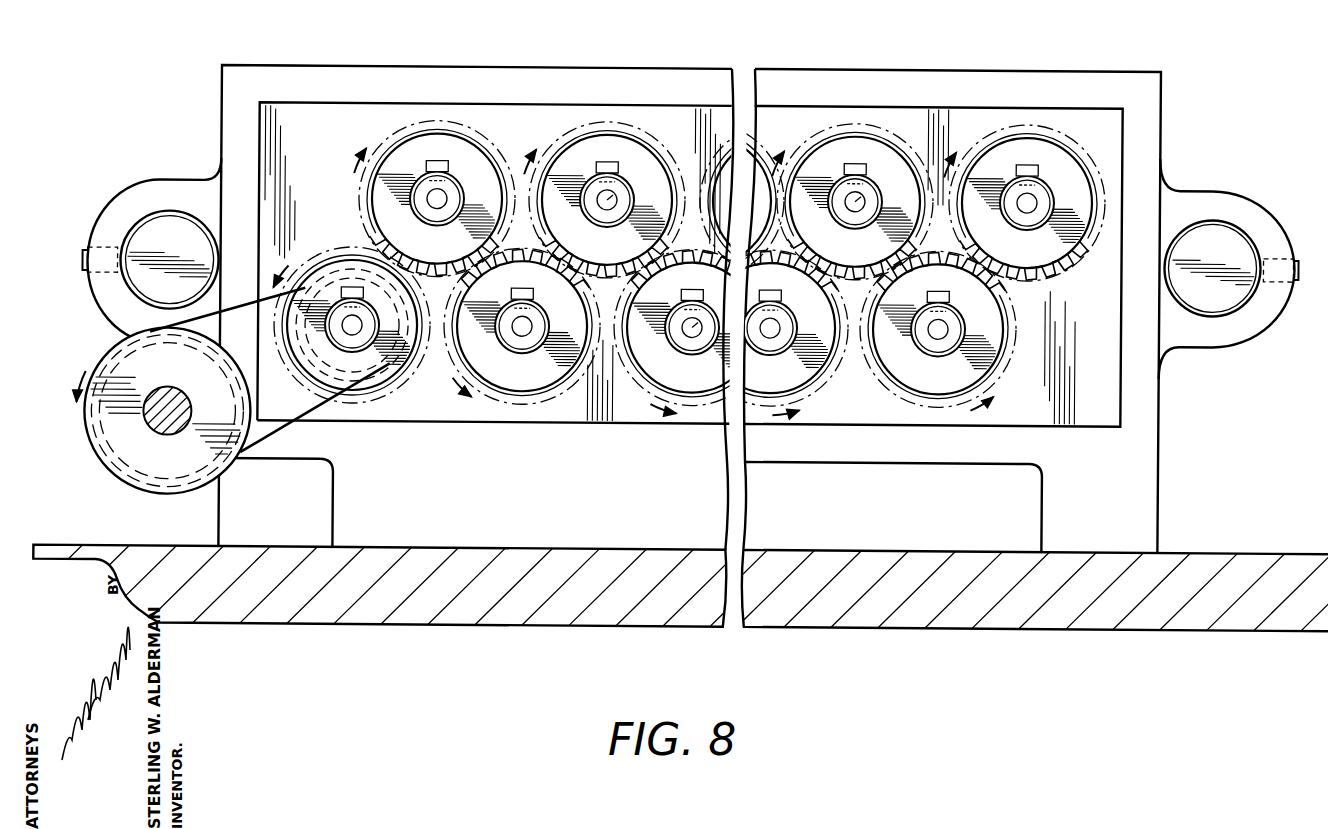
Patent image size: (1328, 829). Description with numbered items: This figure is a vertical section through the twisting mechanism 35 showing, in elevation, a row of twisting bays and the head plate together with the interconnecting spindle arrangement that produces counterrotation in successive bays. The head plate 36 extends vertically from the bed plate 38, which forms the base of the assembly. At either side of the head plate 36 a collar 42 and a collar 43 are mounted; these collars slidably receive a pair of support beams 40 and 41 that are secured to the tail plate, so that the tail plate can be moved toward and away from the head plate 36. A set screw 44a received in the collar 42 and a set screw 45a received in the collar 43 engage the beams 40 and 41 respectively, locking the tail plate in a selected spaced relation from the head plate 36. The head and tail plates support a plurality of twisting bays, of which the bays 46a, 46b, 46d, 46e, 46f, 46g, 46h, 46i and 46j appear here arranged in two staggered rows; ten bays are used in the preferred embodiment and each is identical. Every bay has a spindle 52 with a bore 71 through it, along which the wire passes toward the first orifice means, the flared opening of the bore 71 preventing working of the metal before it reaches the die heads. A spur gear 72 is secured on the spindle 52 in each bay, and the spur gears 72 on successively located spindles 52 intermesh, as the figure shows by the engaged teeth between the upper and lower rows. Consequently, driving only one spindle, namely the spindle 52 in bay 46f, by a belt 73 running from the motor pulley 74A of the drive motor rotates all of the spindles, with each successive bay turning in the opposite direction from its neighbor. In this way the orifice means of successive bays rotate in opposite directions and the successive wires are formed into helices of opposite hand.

The twisting mechanism 35 is at (253, 43).
The head plate 36 is at (272, 135).
The bed plate 38 is at (834, 570).
The support beam 40 is at (169, 259).
The support beam 41 is at (1212, 268).
The collar 42 is at (150, 188).
The collar 43 is at (1210, 326).
The set screw 44a is at (87, 257).
The set screw 45a is at (1299, 279).
The twisting bay 46a is at (441, 154).
The twisting bay 46b is at (635, 154).
The twisting bay 46d is at (869, 156).
The twisting bay 46e is at (1027, 156).
The twisting bay 46f is at (360, 349).
The twisting bay 46g is at (522, 351).
The twisting bay 46h is at (707, 437).
The twisting bay 46i is at (779, 403).
The twisting bay 46j is at (934, 354).
The spindle 52 is at (455, 193).
The bore 71 is at (633, 193).
The spur gear 72 is at (418, 198).
The belt 73 is at (279, 432).
The motor pulley 74A is at (126, 450).